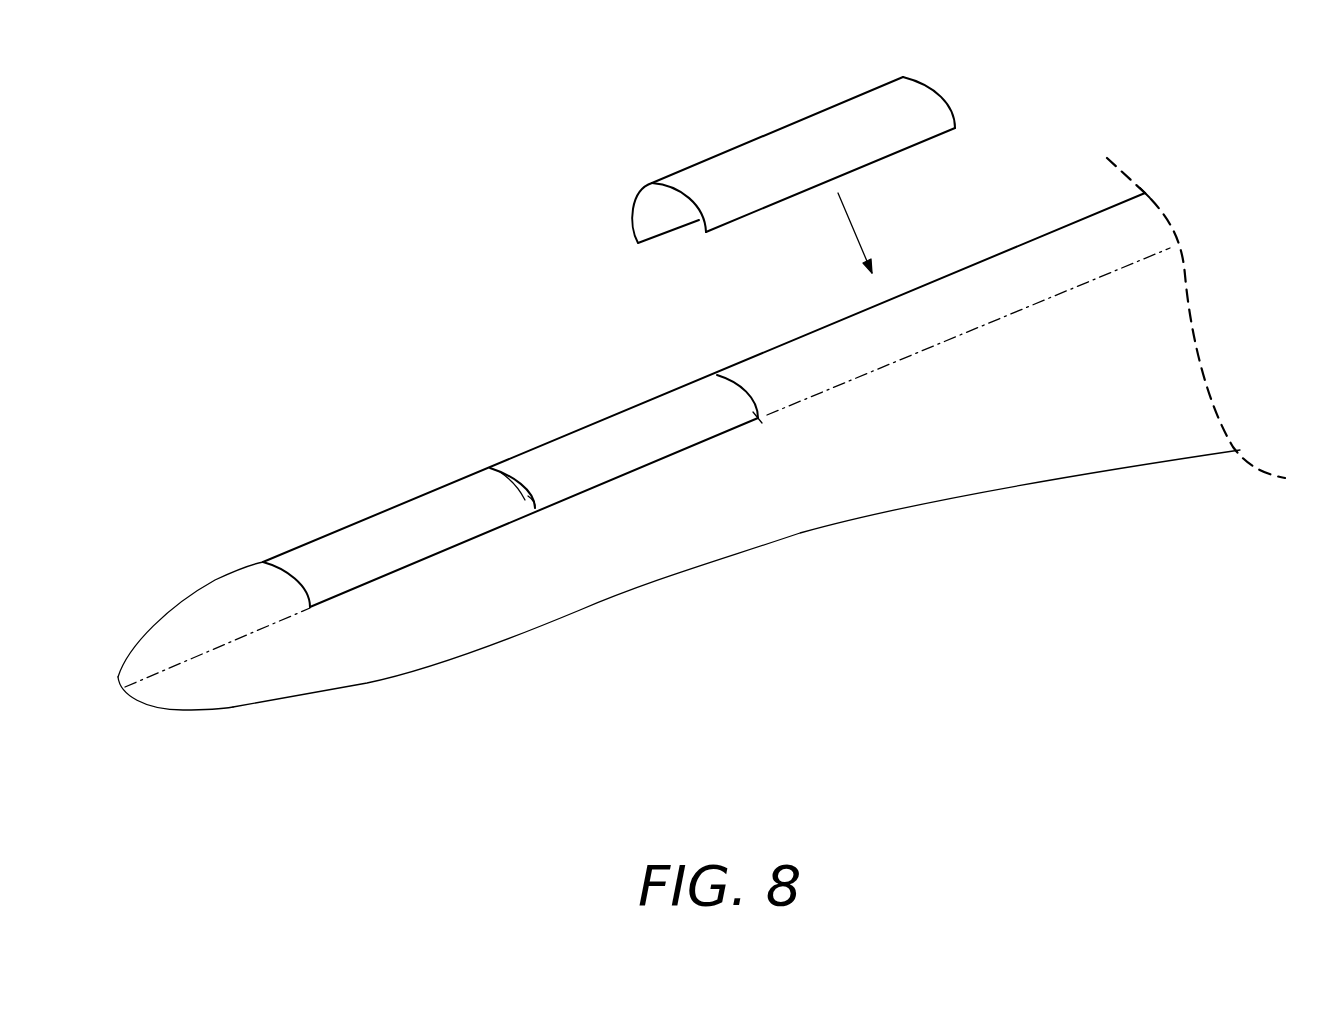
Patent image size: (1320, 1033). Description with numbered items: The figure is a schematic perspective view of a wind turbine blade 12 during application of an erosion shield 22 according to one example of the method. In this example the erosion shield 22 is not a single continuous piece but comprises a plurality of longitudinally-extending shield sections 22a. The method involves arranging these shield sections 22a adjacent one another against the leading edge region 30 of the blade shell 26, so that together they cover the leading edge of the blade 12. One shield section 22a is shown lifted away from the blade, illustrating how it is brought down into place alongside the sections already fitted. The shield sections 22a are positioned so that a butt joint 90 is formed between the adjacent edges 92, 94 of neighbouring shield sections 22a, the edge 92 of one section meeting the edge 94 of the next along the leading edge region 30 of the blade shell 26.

The wind turbine blade 12 is at (1033, 528).
The erosion shield 22 is at (704, 387).
The shield section 22a is at (820, 100).
The blade shell 26 is at (787, 525).
The leading edge region 30 is at (1052, 255).
The butt joint 90 is at (487, 460).
The edge of shield section 92 is at (512, 485).
The edge of adjacent shield section 94 is at (532, 496).